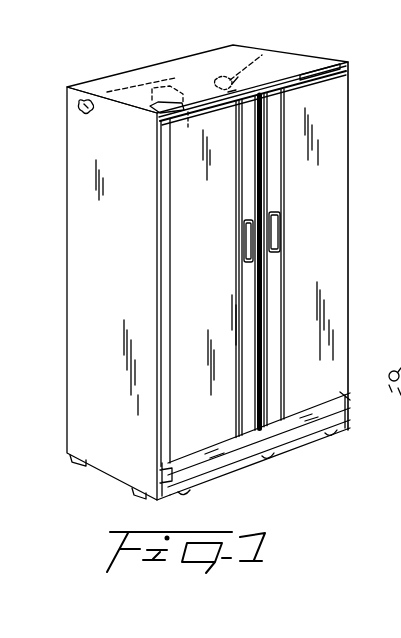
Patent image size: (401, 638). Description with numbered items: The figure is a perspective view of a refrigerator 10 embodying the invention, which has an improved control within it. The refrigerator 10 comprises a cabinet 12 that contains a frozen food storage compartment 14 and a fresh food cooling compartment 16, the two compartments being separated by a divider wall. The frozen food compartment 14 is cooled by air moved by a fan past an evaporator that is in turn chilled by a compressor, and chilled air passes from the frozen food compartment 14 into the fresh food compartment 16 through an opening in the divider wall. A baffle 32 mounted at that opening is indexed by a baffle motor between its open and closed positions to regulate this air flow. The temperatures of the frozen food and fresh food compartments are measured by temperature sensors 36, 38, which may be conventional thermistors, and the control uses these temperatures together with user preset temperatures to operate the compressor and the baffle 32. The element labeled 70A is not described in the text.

The refrigerator 10 is at (362, 86).
The cabinet 12 is at (350, 142).
The frozen food storage compartment 14 is at (88, 173).
The fresh food cooling compartment 16 is at (328, 233).
The baffle 32 is at (190, 130).
The temperature sensor 36 is at (68, 120).
The temperature sensor 38 is at (248, 68).
The latch member 70A is at (390, 369).